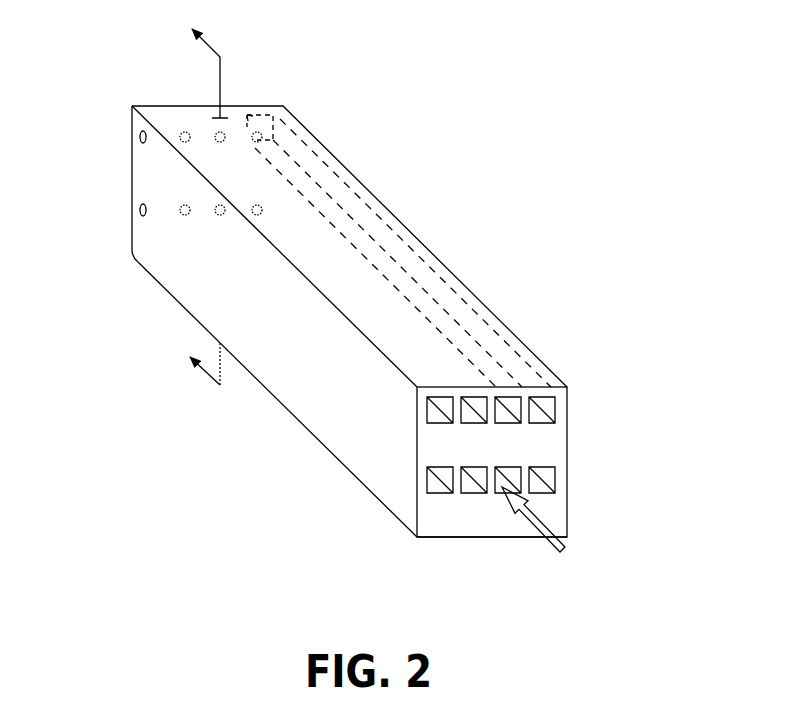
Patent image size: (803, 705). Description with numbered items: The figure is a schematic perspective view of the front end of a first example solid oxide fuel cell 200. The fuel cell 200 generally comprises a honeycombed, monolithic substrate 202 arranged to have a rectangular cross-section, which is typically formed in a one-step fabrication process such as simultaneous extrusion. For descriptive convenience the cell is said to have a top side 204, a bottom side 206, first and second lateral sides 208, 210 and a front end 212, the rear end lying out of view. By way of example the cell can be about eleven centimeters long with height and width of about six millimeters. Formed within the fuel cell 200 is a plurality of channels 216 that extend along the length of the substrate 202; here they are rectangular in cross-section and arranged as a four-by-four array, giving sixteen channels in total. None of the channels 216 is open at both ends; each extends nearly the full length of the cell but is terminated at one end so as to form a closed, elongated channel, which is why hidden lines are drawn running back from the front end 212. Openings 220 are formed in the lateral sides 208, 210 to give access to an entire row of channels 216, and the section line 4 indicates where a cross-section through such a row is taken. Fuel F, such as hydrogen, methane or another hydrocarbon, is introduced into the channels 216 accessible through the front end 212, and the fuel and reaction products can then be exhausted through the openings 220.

The solid oxide fuel cell 200 is at (358, 307).
The substrate 202 is at (474, 261).
The top side 204 is at (369, 198).
The bottom side 206 is at (335, 483).
The first lateral side 208 is at (302, 383).
The second lateral side 210 is at (568, 452).
The front end 212 is at (438, 523).
The channels 216 is at (429, 422).
The openings 220 is at (123, 138).
The section line 4- 4 is at (209, 211).
The fuel F is at (563, 546).